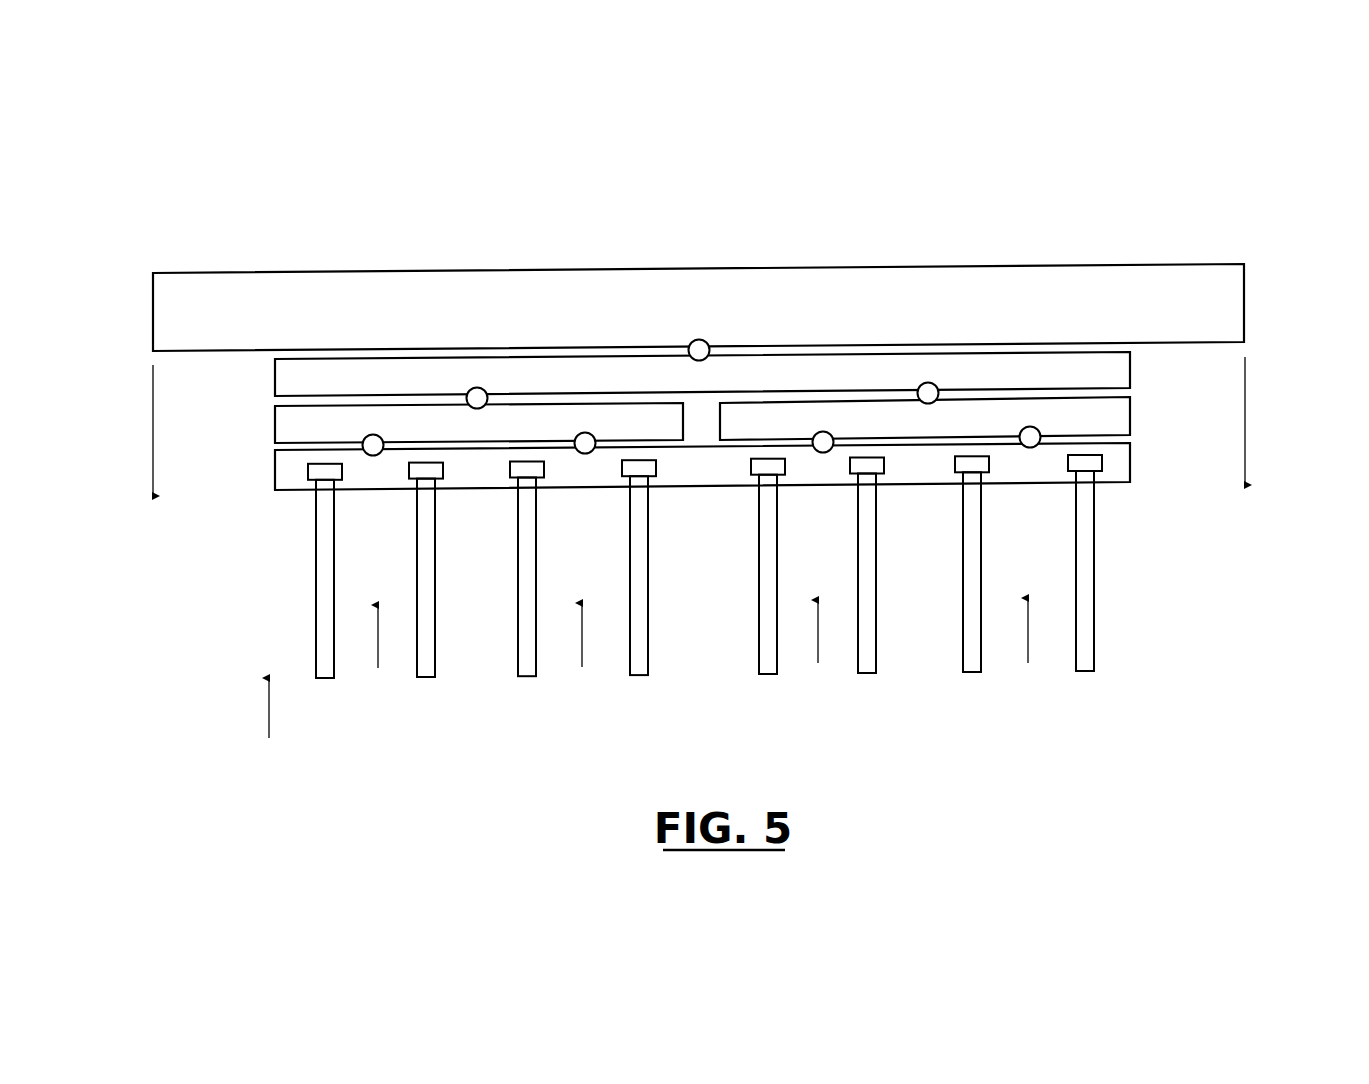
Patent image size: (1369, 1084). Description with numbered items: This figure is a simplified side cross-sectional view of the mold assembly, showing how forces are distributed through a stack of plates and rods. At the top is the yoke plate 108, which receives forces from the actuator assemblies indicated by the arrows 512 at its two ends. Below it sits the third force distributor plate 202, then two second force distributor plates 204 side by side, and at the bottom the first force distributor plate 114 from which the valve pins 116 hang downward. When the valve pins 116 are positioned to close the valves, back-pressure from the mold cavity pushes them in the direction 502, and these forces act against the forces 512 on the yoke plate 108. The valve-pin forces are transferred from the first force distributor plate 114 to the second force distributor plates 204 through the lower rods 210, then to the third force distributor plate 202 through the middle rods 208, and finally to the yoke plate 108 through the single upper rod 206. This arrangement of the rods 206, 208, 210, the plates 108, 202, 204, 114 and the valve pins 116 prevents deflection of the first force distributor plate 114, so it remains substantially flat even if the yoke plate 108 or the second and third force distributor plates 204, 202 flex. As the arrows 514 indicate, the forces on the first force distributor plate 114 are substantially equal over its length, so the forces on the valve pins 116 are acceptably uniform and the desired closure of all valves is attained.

The yoke plate 108 is at (1118, 286).
The third force distributor plate 202 is at (1115, 365).
The second force distributor plates 204 is at (1115, 420).
The first force distributor plate 114 is at (1115, 472).
The upper rod 206 is at (699, 339).
The middle rods 208 is at (478, 387).
The lower rods 210 is at (372, 455).
The valve pins 116 is at (325, 662).
The arrows 514 is at (374, 640).
The direction 502 is at (268, 724).
The arrows 512 is at (153, 440).